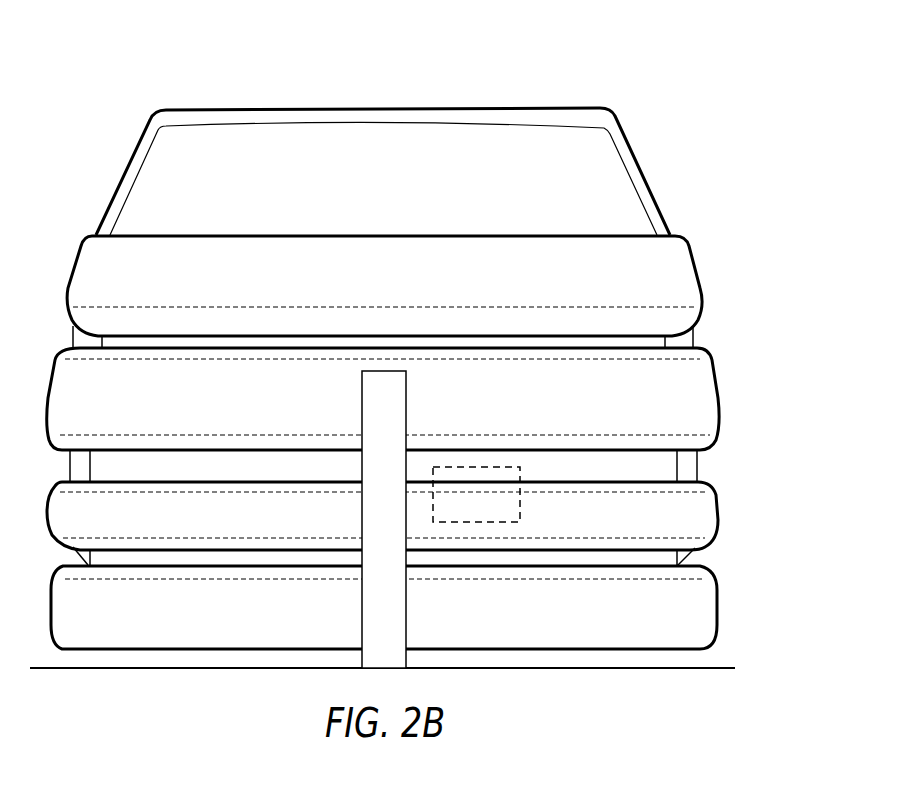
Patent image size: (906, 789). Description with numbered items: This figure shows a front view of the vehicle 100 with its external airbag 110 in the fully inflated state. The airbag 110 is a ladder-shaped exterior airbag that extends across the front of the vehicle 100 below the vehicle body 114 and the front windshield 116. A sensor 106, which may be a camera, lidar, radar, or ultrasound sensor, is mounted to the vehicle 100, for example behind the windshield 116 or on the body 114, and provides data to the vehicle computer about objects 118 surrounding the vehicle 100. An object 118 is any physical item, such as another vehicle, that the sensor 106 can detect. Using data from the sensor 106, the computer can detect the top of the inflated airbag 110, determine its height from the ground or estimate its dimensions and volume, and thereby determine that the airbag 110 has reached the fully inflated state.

The vehicle 100 is at (418, 365).
The sensor 106 is at (500, 450).
The external airbag 110 is at (718, 386).
The vehicle body 114 is at (260, 108).
The front windshield 116 is at (472, 143).
The object 118 is at (362, 615).